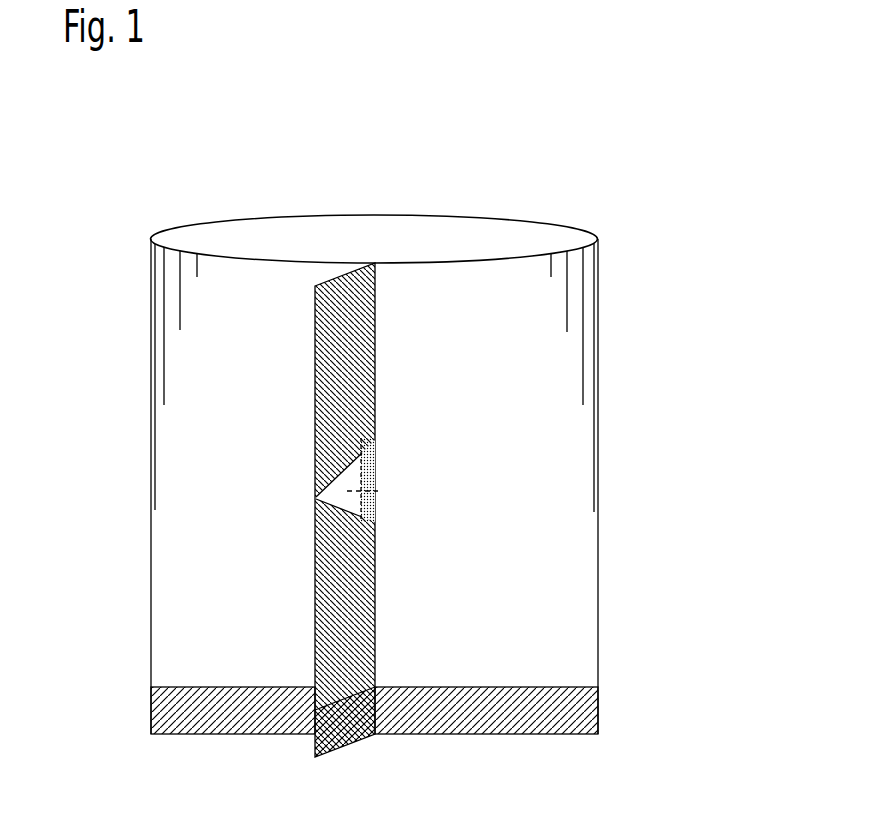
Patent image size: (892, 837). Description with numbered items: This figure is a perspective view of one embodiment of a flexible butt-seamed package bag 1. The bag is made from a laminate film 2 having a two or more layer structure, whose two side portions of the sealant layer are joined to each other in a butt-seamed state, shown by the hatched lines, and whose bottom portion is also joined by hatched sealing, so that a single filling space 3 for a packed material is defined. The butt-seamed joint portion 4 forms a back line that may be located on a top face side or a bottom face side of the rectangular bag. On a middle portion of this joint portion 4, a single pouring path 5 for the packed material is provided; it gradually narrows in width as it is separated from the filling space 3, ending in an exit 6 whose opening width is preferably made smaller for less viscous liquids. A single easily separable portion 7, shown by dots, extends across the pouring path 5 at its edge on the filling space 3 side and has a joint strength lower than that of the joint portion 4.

The butt-seamed package bag 1 is at (617, 403).
The laminate film 2 is at (223, 458).
The filling space 3 is at (357, 245).
The butt-seamed joint portion 4 is at (338, 620).
The pouring path 5 is at (347, 491).
The exit 6 is at (315, 497).
The easily separable portion 7 is at (372, 474).